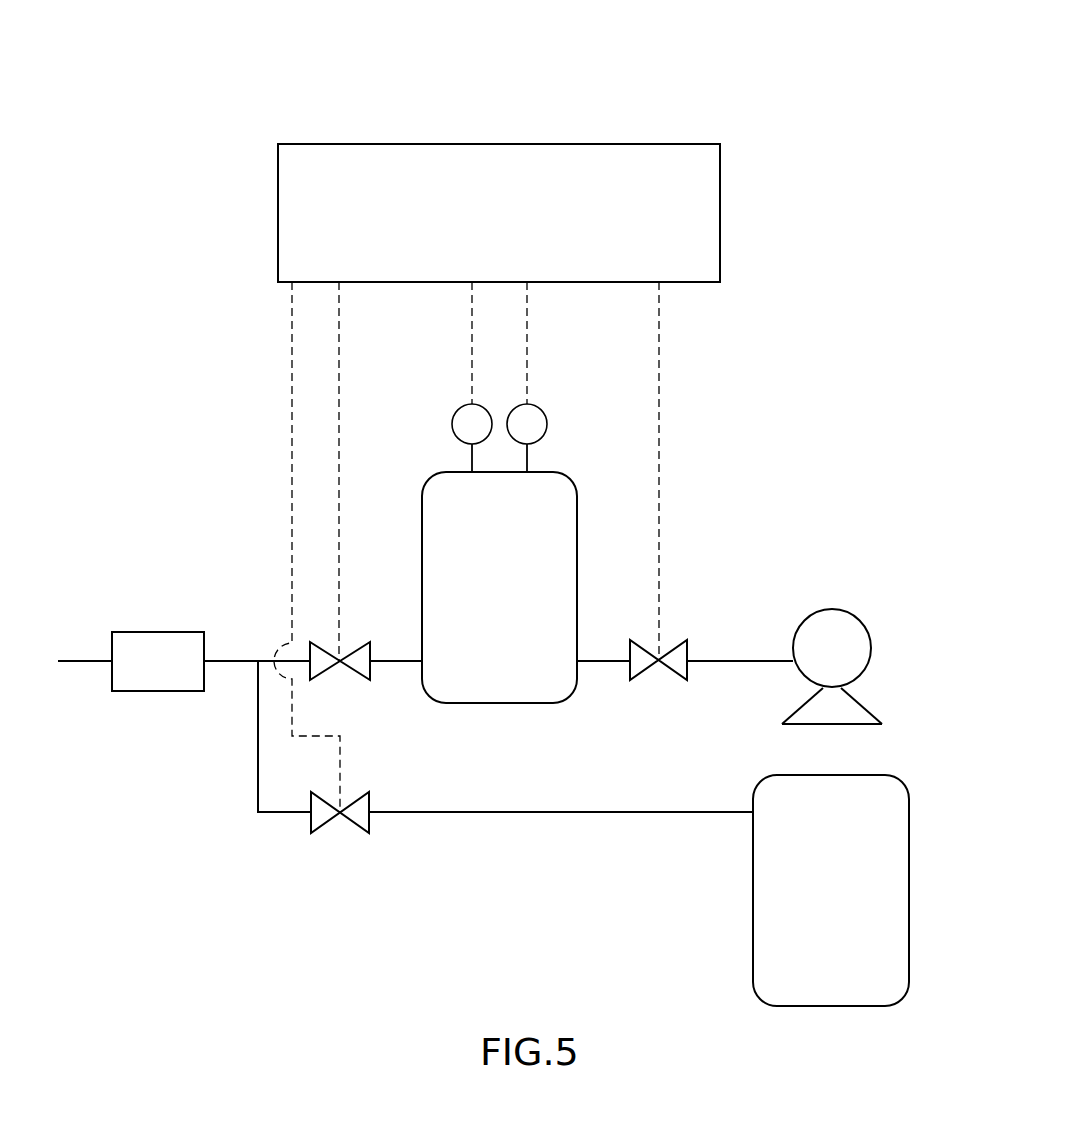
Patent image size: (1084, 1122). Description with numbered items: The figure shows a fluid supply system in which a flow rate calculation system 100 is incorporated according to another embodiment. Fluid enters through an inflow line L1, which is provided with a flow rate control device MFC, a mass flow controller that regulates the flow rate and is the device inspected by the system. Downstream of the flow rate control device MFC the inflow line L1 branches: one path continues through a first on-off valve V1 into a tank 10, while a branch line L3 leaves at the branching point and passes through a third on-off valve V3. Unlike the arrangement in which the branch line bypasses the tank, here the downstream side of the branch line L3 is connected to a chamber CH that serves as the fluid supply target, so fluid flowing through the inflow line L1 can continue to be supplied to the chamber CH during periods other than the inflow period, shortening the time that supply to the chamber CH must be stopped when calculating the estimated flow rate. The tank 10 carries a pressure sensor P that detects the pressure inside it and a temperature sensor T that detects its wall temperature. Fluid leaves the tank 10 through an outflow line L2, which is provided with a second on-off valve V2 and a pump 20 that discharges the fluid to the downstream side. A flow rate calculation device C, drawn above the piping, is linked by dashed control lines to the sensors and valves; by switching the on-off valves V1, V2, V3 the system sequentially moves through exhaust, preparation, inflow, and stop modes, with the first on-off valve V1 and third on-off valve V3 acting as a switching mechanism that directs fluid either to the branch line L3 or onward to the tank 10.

The flow rate calculation system 100 is at (803, 68).
The flow rate calculation device C is at (720, 144).
The tank 10 is at (577, 478).
The pump 20 is at (848, 615).
The flow rate control device MFC is at (112, 691).
The inflow line L1 is at (232, 662).
The outflow line L2 is at (717, 662).
The branch line L3 is at (492, 815).
The first on-off valve V1 is at (368, 678).
The second on-off valve V2 is at (688, 641).
The third on-off valve V3 is at (369, 793).
The chamber CH is at (902, 778).
The pressure sensor P is at (472, 438).
The temperature sensor T is at (527, 438).